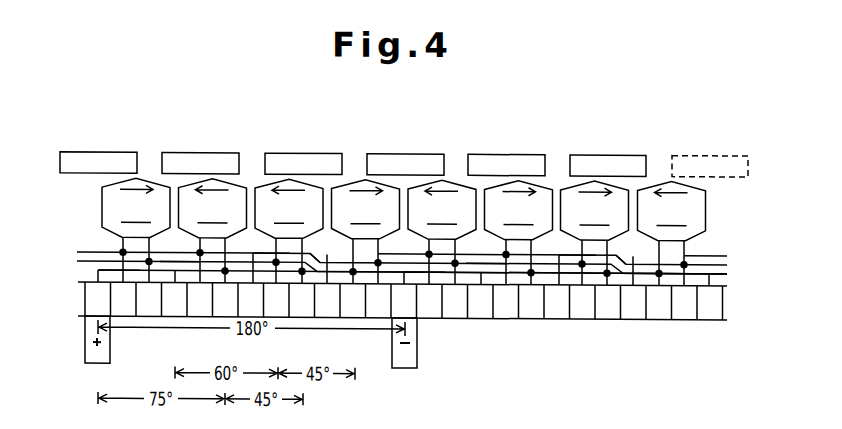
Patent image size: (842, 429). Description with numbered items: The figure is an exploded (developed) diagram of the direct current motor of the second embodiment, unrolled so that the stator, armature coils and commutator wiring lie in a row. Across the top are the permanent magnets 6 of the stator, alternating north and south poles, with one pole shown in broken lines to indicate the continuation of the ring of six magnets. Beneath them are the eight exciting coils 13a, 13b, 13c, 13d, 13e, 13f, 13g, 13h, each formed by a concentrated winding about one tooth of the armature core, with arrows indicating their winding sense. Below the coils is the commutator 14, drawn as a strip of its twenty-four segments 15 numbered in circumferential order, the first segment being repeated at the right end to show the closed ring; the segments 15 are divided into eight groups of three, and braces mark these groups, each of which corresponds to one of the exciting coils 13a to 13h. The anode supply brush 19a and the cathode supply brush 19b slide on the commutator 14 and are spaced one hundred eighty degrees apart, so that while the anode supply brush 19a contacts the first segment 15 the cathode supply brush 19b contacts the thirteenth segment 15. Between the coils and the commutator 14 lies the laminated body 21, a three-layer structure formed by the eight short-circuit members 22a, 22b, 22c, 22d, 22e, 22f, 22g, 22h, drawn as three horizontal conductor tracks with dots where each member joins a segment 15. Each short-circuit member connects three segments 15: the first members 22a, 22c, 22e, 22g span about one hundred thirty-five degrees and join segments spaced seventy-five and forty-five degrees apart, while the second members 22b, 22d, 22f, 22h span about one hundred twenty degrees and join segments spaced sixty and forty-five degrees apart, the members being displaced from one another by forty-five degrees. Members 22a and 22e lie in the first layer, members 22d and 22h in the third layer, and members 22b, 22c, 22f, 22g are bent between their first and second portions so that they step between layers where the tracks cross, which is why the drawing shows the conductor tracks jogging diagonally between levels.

The permanent magnet 6 is at (170, 152).
The first exciting coil 13a is at (136, 230).
The second exciting coil 13b is at (213, 231).
The third exciting coil 13c is at (289, 231).
The fourth exciting coil 13d is at (366, 232).
The fifth exciting coil 13e is at (442, 232).
The sixth exciting coil 13f is at (519, 232).
The seventh exciting coil 13g is at (595, 233).
The eighth exciting coil 13h is at (672, 233).
The commutator 14 is at (728, 296).
The segment 15 is at (632, 348).
The anode supply brush 19a is at (88, 364).
The cathode supply brush 19b is at (405, 367).
The laminated body 21 is at (70, 250).
The short-circuit member 22a is at (113, 269).
The short-circuit member 22b is at (182, 261).
The short-circuit member 22c is at (253, 259).
The short-circuit member 22d is at (327, 260).
The short-circuit member 22e is at (419, 269).
The short-circuit member 22f is at (488, 261).
The short-circuit member 22g is at (559, 259).
The short-circuit member 22h is at (633, 260).